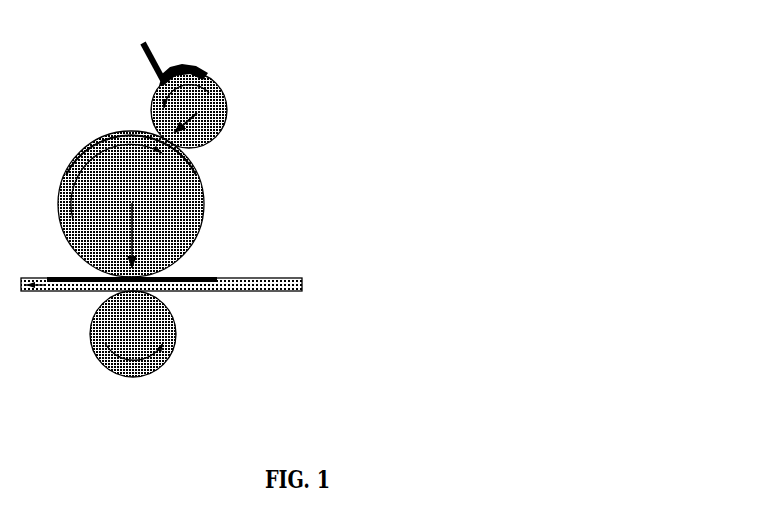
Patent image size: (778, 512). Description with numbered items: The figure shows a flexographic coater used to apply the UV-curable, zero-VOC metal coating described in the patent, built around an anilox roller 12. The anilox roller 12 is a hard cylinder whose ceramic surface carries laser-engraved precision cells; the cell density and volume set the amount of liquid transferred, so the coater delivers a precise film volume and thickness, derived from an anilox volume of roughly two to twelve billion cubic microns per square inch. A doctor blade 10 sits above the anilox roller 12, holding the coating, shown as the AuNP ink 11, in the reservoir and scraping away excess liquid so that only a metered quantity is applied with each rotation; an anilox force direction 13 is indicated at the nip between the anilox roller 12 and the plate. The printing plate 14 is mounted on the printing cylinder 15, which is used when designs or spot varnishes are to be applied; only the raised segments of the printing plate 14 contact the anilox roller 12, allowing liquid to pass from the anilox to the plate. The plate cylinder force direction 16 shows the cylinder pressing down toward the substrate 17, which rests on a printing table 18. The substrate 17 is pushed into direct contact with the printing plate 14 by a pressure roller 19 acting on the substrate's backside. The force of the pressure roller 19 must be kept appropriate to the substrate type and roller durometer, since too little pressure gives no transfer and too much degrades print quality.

The doctor blade 10 is at (162, 47).
The AuNP ink 11 is at (181, 68).
The anilox roller 12 is at (230, 87).
The anilox force direction 13 is at (189, 120).
The printing plate 14 is at (204, 167).
The printing cylinder 15 is at (183, 190).
The plate cylinder force direction 16 is at (139, 225).
The substrate 17 is at (204, 274).
The printing table 18 is at (245, 278).
The pressure roller 19 is at (181, 320).